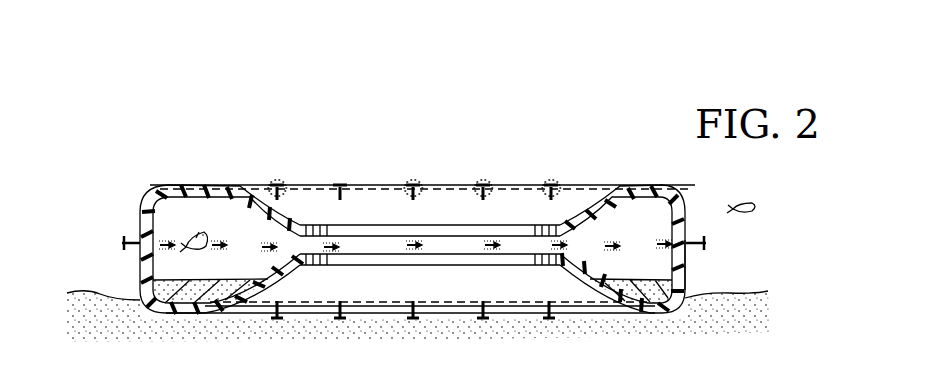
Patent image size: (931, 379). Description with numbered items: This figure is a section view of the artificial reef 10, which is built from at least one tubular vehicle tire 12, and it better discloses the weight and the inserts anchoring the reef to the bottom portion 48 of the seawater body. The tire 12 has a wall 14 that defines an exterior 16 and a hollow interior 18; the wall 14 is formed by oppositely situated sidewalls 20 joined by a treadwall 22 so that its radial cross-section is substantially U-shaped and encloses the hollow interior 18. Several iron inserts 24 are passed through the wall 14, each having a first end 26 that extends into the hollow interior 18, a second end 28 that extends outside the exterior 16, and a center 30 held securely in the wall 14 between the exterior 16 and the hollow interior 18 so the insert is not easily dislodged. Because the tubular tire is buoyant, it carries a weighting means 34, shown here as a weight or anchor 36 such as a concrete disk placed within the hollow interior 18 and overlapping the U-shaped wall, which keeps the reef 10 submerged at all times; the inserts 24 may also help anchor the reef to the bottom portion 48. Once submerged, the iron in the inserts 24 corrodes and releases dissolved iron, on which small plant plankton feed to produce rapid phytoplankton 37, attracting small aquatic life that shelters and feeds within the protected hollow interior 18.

The artificial reef 10 is at (598, 156).
The tubular vehicle tire 12 is at (447, 200).
The wall 14 is at (681, 190).
The exterior 16 is at (696, 270).
The hollow interior 18 is at (660, 228).
The sidewalls 20 is at (371, 200).
The treadwall 22 is at (140, 265).
The iron insert 24 is at (553, 183).
The first end 26 is at (660, 247).
The second end 28 is at (706, 242).
The center 30 is at (690, 228).
The weighting means 34 is at (200, 312).
The weight or anchor 36 is at (222, 312).
The phytoplankton 37 is at (277, 183).
The bottom portion 48 is at (722, 300).